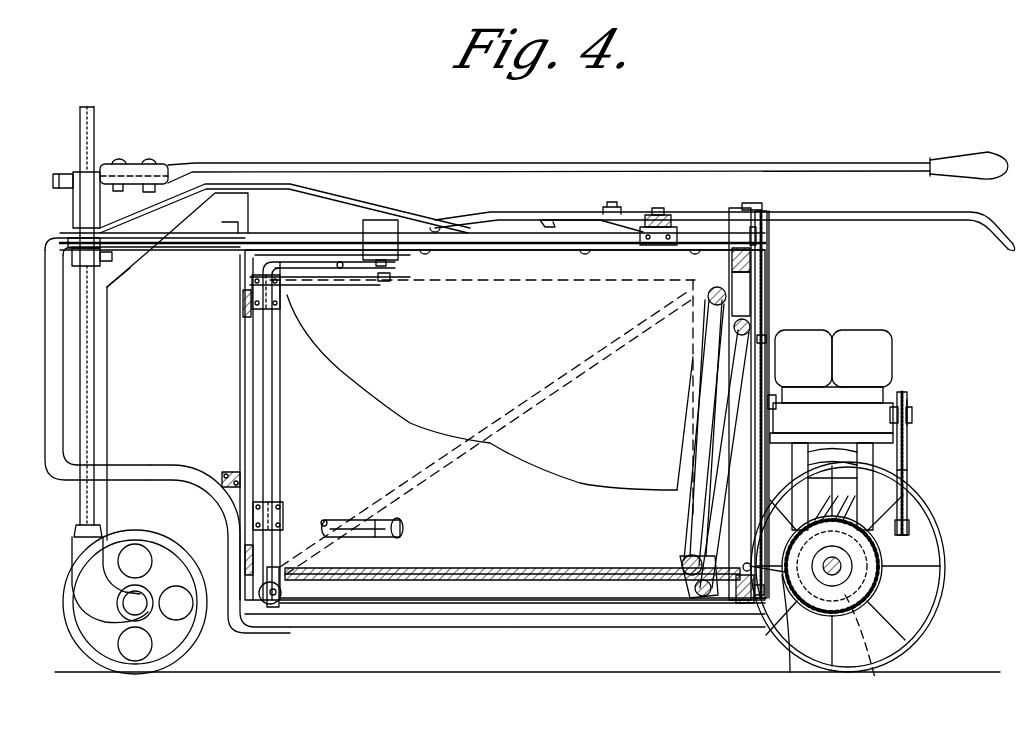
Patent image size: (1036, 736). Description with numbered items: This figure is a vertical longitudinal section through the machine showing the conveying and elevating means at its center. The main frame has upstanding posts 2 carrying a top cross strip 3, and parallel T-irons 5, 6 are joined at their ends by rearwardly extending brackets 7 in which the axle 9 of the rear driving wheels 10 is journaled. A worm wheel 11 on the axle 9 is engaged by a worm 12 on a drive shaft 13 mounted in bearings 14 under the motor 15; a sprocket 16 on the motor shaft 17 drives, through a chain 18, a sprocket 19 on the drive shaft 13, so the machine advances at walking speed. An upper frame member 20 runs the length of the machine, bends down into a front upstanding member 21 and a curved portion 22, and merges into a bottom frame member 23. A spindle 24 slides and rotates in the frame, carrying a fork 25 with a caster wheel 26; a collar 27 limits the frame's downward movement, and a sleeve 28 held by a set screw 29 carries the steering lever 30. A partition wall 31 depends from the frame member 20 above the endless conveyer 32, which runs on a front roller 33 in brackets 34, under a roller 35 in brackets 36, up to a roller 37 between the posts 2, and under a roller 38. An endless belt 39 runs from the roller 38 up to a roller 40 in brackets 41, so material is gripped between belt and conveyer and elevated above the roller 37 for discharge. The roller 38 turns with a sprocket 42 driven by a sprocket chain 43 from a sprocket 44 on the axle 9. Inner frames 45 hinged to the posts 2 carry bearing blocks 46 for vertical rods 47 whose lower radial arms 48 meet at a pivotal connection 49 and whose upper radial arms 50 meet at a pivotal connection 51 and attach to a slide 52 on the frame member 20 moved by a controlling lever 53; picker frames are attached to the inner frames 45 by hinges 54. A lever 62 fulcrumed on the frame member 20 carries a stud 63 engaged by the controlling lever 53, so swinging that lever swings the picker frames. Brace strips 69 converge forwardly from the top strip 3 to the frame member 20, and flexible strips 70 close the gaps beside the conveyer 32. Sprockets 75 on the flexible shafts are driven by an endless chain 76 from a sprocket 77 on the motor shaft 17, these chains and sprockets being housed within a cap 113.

The upstanding posts 2 is at (752, 290).
The top cross strip 3 is at (767, 247).
The T-iron 5 is at (762, 605).
The T-iron 6 is at (790, 466).
The brackets 7 is at (830, 470).
The axle 9 is at (840, 568).
The rear or driving wheels 10 is at (915, 627).
The worm wheel 11 is at (850, 578).
The worm 12 is at (858, 500).
The drive shaft 13 is at (860, 512).
The bearings 14 is at (908, 448).
The motor 15 is at (872, 340).
The sprocket 16 is at (905, 405).
The motor shaft 17 is at (910, 412).
The chain 18 is at (910, 470).
The sprocket 19 is at (907, 528).
The upper frame member 20 is at (532, 270).
The front upstanding member 21 is at (45, 290).
The curved portion 22 is at (165, 466).
The bottom frame member 23 is at (600, 628).
The spindle 24 is at (94, 130).
The fork 25 is at (78, 534).
The caster wheel 26 is at (168, 650).
The collar 27 is at (72, 256).
The sleeve 28 is at (84, 200).
The set screw 29 is at (60, 174).
The steering lever 30 is at (425, 162).
The partition wall 31 is at (222, 360).
The endless conveyer 32 is at (465, 575).
The front roller 33 is at (283, 600).
The brackets 34 is at (273, 607).
The roller 35 is at (703, 598).
The brackets 36 is at (690, 580).
The roller 37 is at (755, 328).
The roller 38 is at (683, 560).
The endless belt 39 is at (700, 394).
The roller 40 is at (708, 296).
The brackets 41 is at (738, 270).
The sprocket 42 is at (690, 558).
The sprocket chain 43 is at (788, 630).
The sprocket 44 is at (878, 648).
The inner frames 45 is at (283, 390).
The bearing blocks 46 is at (254, 281).
The rods 47 is at (268, 436).
The radial arms 48 is at (335, 520).
The pivotal connection 49 is at (400, 518).
The radial arms 50 is at (340, 262).
The pivotal connection 51 is at (404, 280).
The slide 52 is at (384, 232).
The controlling lever 53 is at (522, 200).
The hinges 54 is at (243, 300).
The lever 62 is at (630, 220).
The stud 63 is at (613, 207).
The brace strips 69 is at (355, 188).
The flexible strips 70 is at (520, 580).
The sprocket 75 is at (768, 212).
The endless chain 76 is at (767, 340).
The sprocket 77 is at (770, 400).
The cap 113 is at (139, 317).